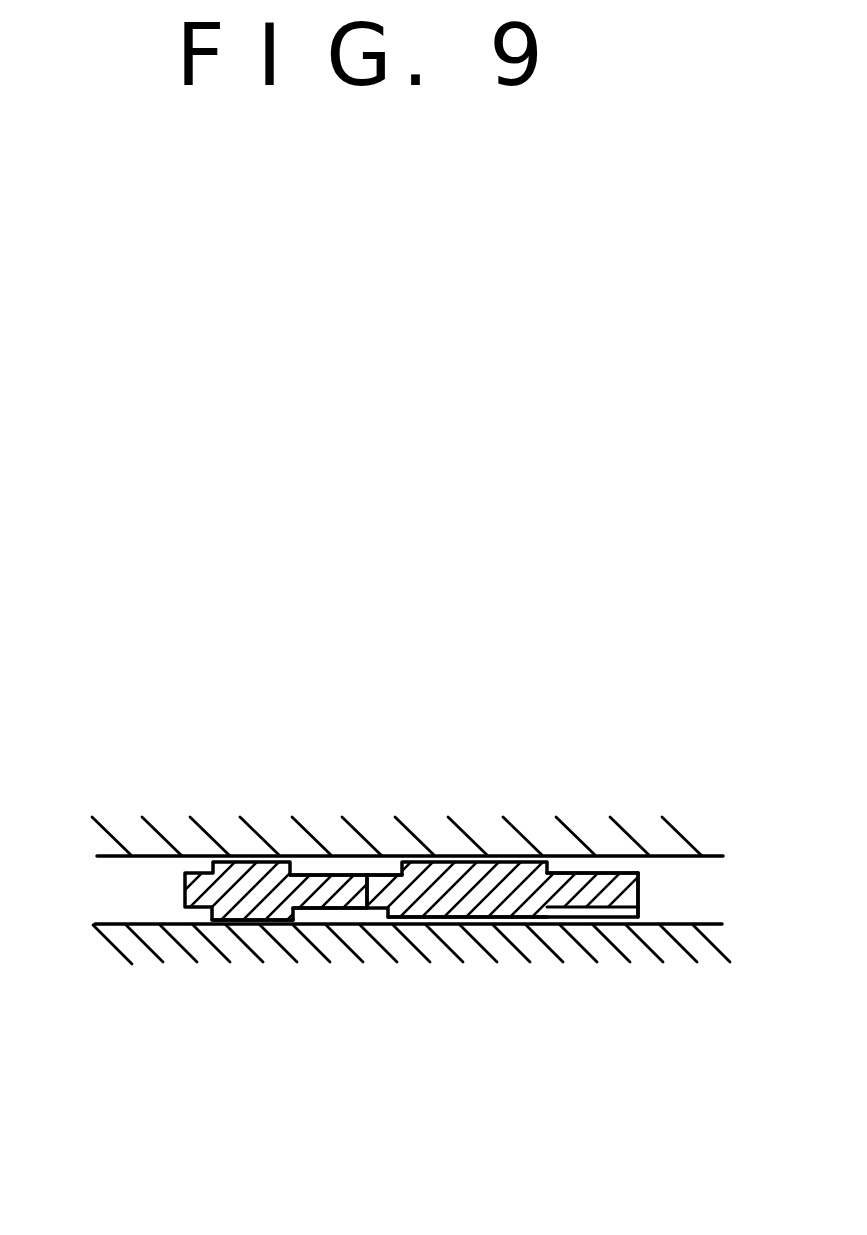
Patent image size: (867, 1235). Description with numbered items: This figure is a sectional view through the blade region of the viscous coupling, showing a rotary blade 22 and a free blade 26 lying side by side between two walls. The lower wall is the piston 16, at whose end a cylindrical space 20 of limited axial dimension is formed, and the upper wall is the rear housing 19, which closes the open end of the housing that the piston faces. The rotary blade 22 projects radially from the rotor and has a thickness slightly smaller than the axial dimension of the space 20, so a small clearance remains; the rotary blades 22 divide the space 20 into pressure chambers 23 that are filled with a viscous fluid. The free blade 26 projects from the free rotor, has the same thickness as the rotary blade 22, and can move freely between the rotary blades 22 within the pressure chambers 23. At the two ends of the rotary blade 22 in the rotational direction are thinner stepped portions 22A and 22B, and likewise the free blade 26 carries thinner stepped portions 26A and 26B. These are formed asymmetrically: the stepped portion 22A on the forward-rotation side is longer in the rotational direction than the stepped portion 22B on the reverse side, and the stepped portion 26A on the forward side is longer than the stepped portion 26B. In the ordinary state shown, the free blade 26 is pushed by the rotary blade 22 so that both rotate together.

The piston 16 is at (158, 942).
The rear housing 19 is at (677, 832).
The cylindrical space 20 is at (673, 940).
The rotary blade 22 is at (262, 880).
The stepped portion 22A is at (322, 912).
The stepped portion 22B is at (201, 910).
The pressure chamber 23 is at (140, 877).
The free blade 26 is at (488, 870).
The stepped portion 26A is at (583, 910).
The stepped portion 26B is at (392, 912).